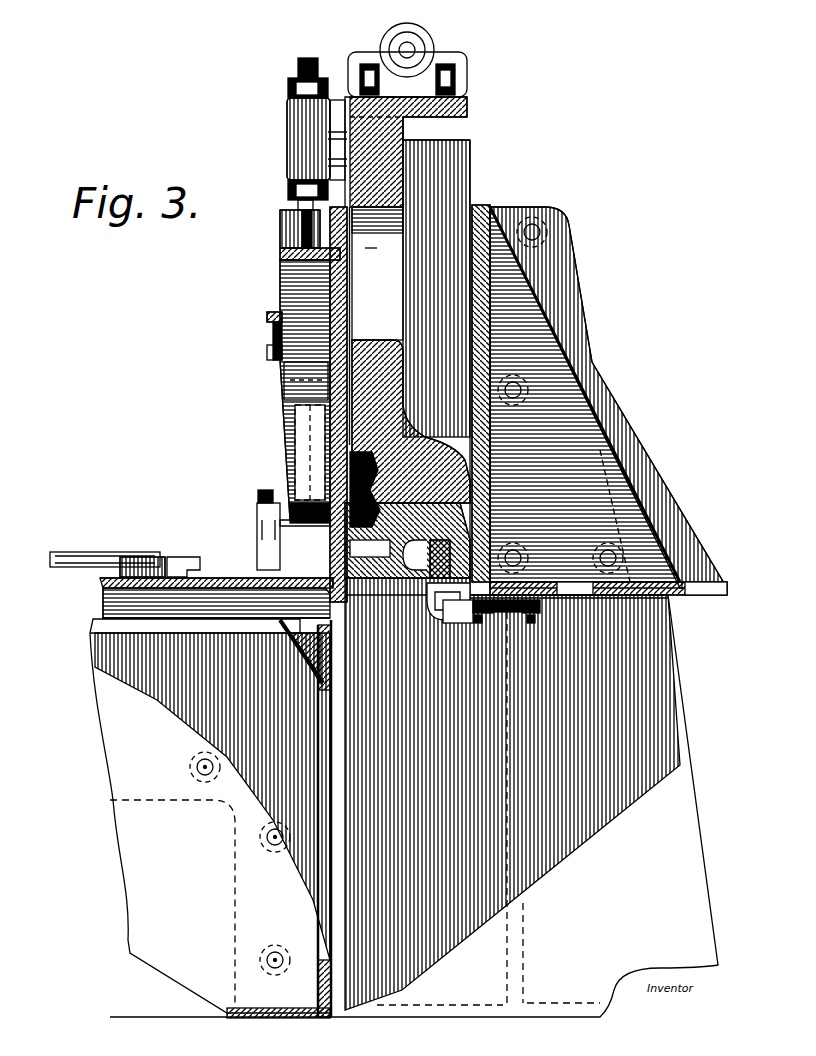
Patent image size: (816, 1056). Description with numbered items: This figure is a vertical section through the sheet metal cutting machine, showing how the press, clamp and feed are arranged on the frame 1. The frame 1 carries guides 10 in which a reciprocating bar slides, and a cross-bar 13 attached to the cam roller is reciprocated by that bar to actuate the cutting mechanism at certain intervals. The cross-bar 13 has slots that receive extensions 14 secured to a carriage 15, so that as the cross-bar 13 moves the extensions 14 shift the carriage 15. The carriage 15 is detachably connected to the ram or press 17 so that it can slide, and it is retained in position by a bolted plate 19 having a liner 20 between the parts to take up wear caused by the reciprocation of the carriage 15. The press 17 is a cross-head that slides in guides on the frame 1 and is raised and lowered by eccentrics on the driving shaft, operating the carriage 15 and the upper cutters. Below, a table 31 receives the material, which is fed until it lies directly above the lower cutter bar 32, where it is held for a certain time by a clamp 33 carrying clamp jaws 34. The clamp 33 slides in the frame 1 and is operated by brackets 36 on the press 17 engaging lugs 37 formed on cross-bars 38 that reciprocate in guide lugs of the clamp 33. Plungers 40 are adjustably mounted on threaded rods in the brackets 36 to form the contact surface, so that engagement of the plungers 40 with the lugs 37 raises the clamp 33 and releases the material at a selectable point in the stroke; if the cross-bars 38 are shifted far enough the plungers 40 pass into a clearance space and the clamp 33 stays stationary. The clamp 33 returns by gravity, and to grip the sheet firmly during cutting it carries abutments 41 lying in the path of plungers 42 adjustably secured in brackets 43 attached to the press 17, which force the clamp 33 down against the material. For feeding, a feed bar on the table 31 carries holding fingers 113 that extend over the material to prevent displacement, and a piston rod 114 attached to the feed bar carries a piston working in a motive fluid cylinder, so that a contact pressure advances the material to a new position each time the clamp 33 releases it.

The frame 1 is at (445, 858).
The guides 10 is at (407, 540).
The cross-bar 13 is at (493, 614).
The extensions 14 is at (432, 594).
The carriage 15 is at (433, 547).
The ram or press 17 is at (377, 273).
The bolted plate 19 is at (380, 515).
The liner 20 is at (405, 505).
The table 31 is at (225, 587).
The lower cutter bar 32 is at (345, 602).
The clamp 33 is at (293, 538).
The clamp jaws 34 is at (293, 602).
The brackets 36 is at (288, 437).
The lugs 37 is at (274, 345).
The cross-bars 38 is at (270, 320).
The plungers 40 is at (292, 392).
The abutments 41 is at (290, 238).
The plungers 42 is at (283, 212).
The brackets 43 is at (295, 128).
The holding fingers 113 is at (178, 562).
The piston rod 114 is at (80, 562).